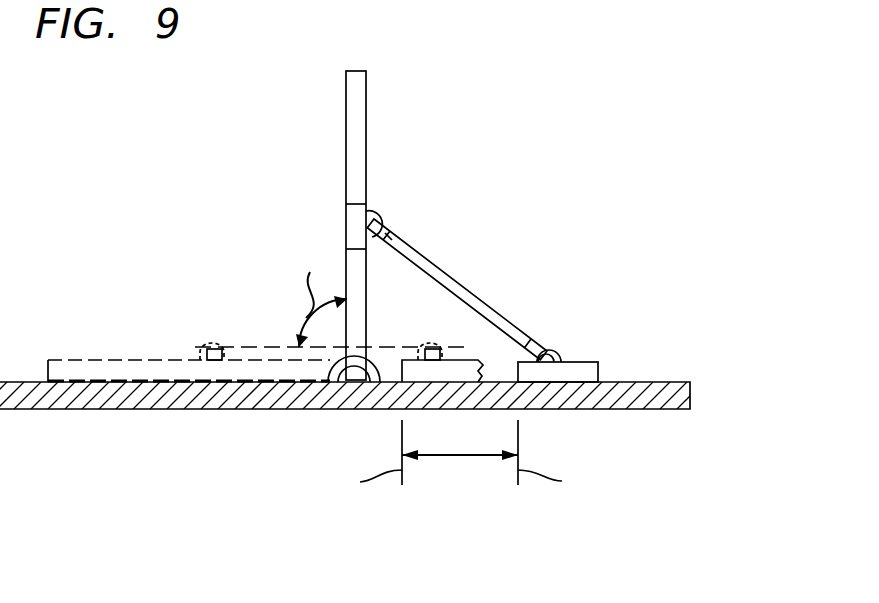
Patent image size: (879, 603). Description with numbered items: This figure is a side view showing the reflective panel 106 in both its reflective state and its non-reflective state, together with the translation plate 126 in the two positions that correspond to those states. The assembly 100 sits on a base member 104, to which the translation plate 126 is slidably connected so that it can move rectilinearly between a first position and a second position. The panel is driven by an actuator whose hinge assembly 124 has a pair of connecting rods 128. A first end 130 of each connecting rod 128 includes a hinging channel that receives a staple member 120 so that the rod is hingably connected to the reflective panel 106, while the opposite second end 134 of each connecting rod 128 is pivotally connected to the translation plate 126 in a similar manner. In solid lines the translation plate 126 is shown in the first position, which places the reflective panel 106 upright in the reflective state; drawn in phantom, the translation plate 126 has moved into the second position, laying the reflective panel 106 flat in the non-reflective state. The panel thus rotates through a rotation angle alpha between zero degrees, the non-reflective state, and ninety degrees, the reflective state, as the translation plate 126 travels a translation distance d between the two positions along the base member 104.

The display device assembly 100 is at (228, 160).
The base member 104 is at (695, 382).
The reflective panel 106 is at (363, 112).
The staple member 120 is at (378, 212).
The hinge assembly 124 is at (482, 290).
The translation plate 126 is at (598, 370).
The connecting rod 128 is at (428, 268).
The first end 130 is at (380, 236).
The second end 134 is at (420, 345).